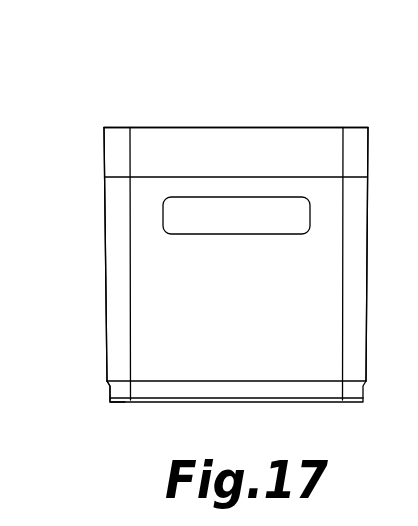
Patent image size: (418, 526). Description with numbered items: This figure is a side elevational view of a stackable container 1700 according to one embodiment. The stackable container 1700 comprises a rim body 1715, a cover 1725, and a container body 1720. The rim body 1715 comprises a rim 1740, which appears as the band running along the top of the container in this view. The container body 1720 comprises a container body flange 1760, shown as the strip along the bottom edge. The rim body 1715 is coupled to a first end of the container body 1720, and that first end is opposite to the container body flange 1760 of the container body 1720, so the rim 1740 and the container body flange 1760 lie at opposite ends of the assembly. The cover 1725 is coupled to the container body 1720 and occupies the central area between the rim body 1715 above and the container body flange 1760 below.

The stackable container 1700 is at (277, 93).
The rim body 1715 is at (100, 148).
The container body 1720 is at (110, 399).
The cover 1725 is at (148, 301).
The rim 1740 is at (165, 127).
The container body flange 1760 is at (213, 390).